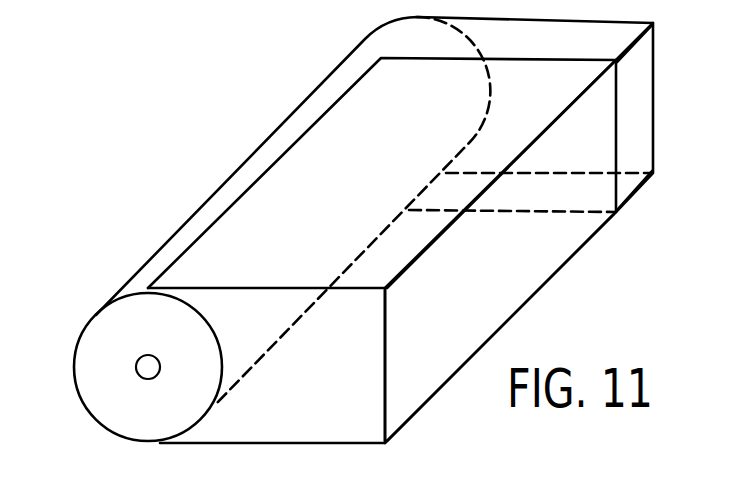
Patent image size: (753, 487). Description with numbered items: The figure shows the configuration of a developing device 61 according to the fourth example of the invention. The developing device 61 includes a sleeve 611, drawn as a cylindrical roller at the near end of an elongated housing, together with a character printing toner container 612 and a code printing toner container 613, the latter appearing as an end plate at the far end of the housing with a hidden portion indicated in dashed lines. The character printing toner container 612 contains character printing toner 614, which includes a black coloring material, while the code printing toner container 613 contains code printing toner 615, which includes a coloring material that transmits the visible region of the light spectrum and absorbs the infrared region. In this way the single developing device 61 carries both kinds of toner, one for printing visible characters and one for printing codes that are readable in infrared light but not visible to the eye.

The developing device 61 is at (310, 97).
The sleeve 611 is at (92, 318).
The character printing toner container 612 is at (496, 334).
The code printing toner container 613 is at (638, 195).
The character printing toner 614 is at (507, 248).
The code printing toner 615 is at (633, 97).